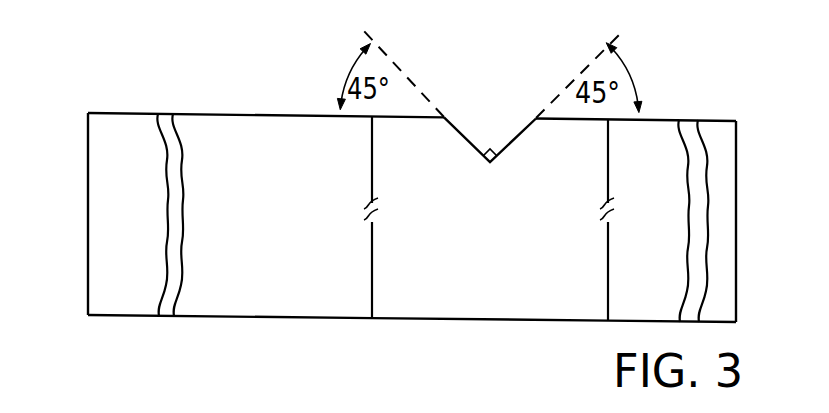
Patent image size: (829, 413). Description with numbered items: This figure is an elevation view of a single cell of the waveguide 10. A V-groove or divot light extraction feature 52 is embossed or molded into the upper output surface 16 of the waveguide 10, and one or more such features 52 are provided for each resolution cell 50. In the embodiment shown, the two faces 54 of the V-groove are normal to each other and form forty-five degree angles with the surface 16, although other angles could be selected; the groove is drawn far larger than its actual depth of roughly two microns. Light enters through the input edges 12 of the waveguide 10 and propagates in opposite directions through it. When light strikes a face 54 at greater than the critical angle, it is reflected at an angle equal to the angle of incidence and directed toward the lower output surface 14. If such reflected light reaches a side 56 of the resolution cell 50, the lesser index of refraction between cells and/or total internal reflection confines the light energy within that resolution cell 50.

The waveguide 10 is at (110, 142).
The input edges 12 is at (107, 219).
The lower output surface 14 is at (136, 317).
The upper output surface 16 is at (330, 116).
The resolution cell 50 is at (452, 298).
The light extraction feature 52 is at (490, 108).
The faces 54 is at (462, 135).
The side 56 is at (372, 283).